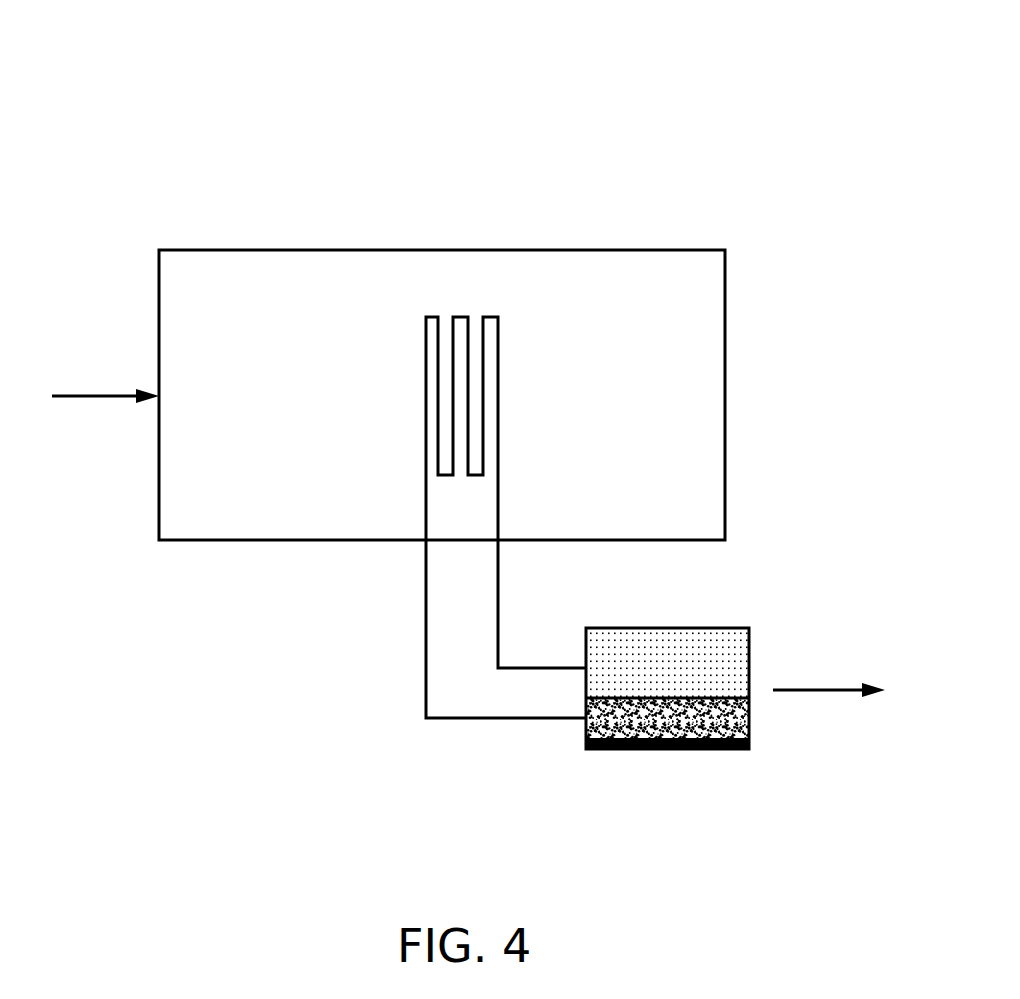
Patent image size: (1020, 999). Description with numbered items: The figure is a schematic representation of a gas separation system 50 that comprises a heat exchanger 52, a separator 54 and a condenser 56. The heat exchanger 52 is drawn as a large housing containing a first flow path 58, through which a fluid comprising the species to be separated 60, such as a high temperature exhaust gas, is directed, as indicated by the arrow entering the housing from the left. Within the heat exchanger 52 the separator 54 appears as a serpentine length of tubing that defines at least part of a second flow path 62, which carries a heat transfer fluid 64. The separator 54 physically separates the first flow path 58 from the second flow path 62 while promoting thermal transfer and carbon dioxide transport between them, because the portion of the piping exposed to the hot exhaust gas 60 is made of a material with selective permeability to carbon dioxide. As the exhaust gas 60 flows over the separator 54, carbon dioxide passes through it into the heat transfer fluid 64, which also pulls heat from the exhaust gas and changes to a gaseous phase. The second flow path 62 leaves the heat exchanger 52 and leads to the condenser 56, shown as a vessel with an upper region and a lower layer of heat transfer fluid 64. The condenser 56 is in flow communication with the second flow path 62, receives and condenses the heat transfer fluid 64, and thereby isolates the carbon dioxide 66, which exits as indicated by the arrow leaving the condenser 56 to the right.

The gas separation system 50 is at (716, 80).
The heat exchanger 52 is at (442, 249).
The separator 54 is at (500, 361).
The condenser 56 is at (732, 640).
The first flow path 58 is at (289, 413).
The fluid comprising the species to be separated 60 is at (98, 393).
The second flow path 62 is at (426, 643).
The heat transfer fluid 64 is at (588, 731).
The carbon dioxide 66 is at (820, 692).